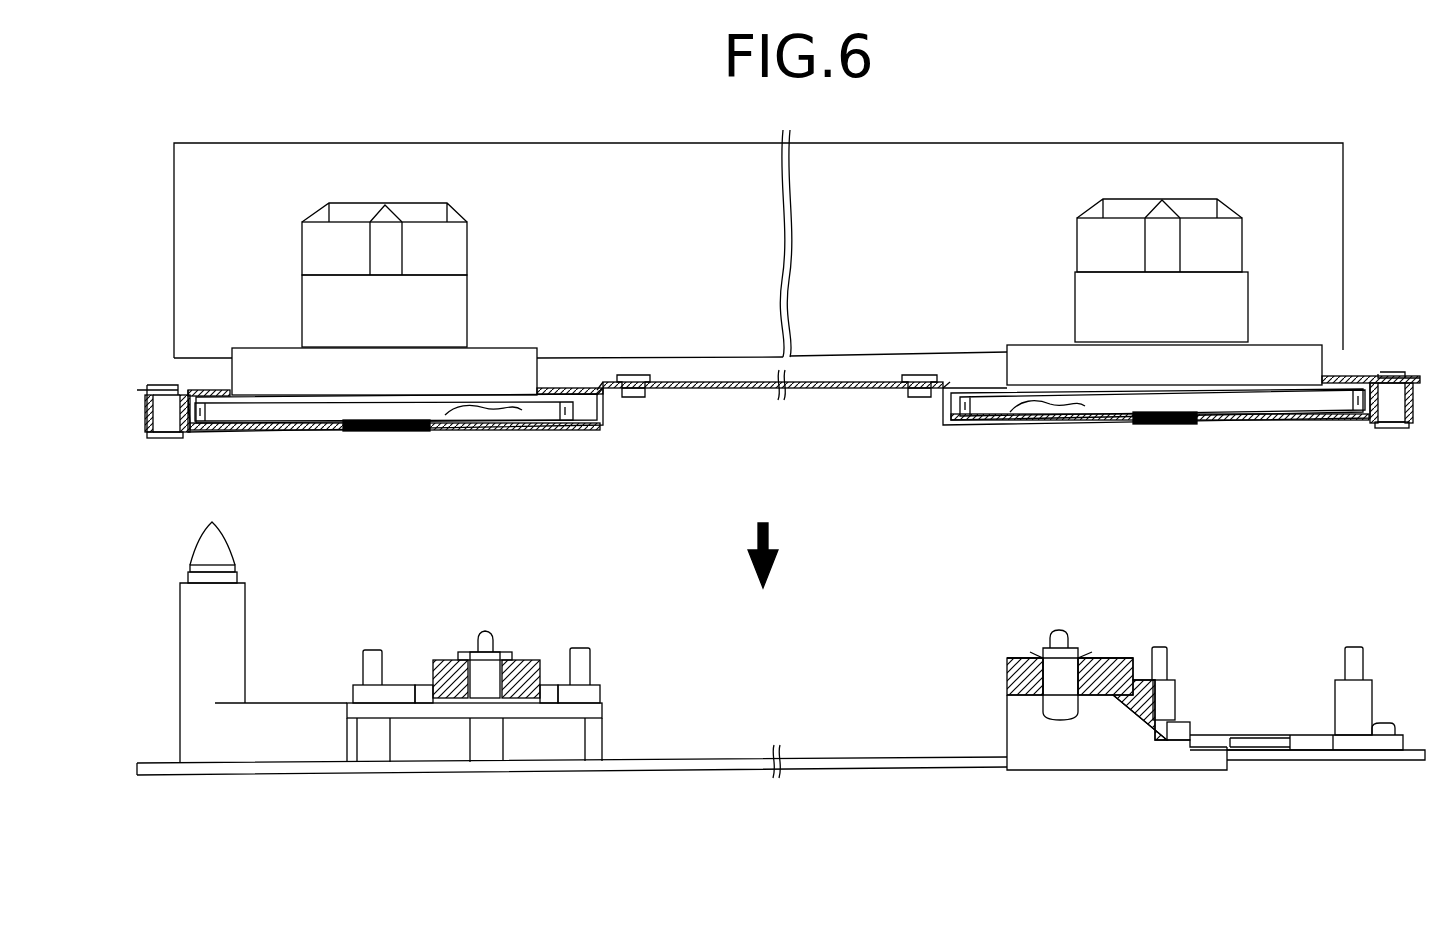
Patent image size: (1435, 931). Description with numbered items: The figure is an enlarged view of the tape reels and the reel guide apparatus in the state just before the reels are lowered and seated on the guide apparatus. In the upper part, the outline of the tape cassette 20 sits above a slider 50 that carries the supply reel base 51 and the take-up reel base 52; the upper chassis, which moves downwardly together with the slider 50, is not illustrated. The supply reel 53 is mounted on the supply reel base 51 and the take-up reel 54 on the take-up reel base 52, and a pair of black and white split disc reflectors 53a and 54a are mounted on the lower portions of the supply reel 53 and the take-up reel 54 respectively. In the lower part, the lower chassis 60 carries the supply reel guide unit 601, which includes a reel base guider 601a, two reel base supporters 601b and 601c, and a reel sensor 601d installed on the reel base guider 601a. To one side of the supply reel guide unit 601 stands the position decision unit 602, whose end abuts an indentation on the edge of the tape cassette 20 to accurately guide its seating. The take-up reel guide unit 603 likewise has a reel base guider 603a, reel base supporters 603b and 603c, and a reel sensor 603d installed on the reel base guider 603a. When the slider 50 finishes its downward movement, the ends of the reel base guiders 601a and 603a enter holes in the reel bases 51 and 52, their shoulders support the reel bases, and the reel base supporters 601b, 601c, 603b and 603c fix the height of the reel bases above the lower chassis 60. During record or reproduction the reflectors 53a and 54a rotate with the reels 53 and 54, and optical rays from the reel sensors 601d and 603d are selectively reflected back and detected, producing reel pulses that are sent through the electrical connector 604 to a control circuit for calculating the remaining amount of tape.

The tape cassette 20 is at (1297, 140).
The slider 50 is at (857, 388).
The supply reel base 51 is at (583, 428).
The take-up reel base 52 is at (1233, 420).
The supply reel 53 is at (470, 292).
The split disc reflector 53a is at (508, 412).
The take-up reel 54 is at (1234, 245).
The split disc reflector 54a is at (1022, 398).
The lower chassis 60 is at (845, 766).
The supply reel guide unit 601 is at (457, 638).
The reel base guider 601a is at (495, 662).
The reel base supporter 601b is at (367, 650).
The reel base supporter 601c is at (582, 660).
The reel sensor 601d is at (505, 655).
The position decision unit 602 is at (248, 584).
The take-up reel guide unit 603 is at (1175, 632).
The reel base guider 603a is at (1062, 632).
The reel base supporter 603b is at (1167, 656).
The reel base supporter 603c is at (1352, 652).
The reel sensor 603d is at (1033, 657).
The electrical connector 604 is at (1125, 757).